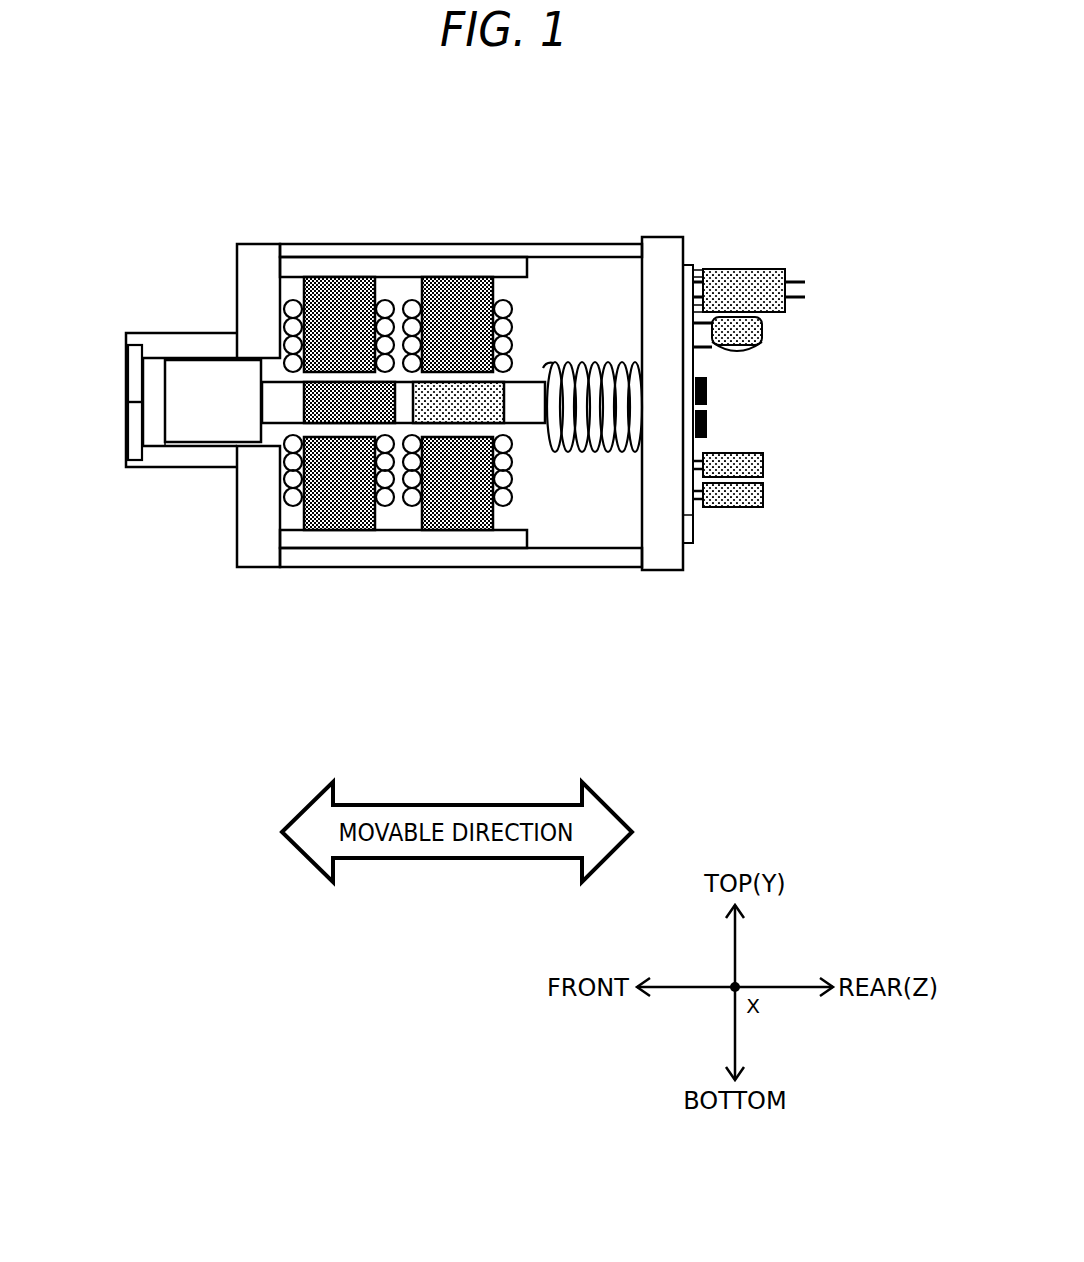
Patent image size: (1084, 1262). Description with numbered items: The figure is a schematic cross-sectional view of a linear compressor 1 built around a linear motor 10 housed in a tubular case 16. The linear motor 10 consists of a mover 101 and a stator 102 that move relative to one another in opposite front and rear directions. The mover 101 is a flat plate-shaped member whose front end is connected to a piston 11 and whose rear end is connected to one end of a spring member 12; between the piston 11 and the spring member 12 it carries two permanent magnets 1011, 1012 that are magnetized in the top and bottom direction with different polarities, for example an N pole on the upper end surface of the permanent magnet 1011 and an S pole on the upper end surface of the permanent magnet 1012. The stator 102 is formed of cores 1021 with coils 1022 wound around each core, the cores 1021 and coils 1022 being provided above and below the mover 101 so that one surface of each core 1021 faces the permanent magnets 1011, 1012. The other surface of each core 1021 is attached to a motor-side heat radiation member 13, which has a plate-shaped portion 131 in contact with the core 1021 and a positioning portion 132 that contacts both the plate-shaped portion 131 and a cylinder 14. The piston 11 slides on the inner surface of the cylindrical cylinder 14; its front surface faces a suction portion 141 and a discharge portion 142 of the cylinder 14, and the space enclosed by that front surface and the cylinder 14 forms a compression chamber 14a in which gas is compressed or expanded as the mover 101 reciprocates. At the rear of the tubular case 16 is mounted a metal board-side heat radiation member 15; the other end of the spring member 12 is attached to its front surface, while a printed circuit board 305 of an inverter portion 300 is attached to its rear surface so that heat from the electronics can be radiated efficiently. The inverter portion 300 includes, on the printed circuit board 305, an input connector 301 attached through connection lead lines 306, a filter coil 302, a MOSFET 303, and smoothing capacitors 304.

The linear compressor 1 is at (168, 211).
The linear motor 10 is at (453, 416).
The mover 101 is at (328, 173).
The permanent magnet 1011 is at (345, 400).
The permanent magnet 1012 is at (452, 398).
The stator 102 is at (468, 665).
The core 1021 is at (477, 522).
The coil 1022 is at (503, 463).
The piston 11 is at (206, 430).
The spring member 12 is at (600, 362).
The motor-side heat radiation member 13 is at (348, 703).
The plate-shaped portion 131 is at (335, 540).
The positioning portion 132 is at (265, 522).
The cylinder 14 is at (155, 460).
The compression chamber 14a is at (150, 380).
The suction portion 141 is at (132, 381).
The discharge portion 142 is at (130, 437).
The board-side heat radiation member 15 is at (662, 542).
The tubular case 16 is at (562, 243).
The inverter portion 300 is at (877, 210).
The input connector 301 is at (765, 270).
The filter coil 302 is at (762, 328).
The metal-oxide-semiconductor field-effect transistor 303 is at (708, 388).
The smoothing capacitors 304 is at (763, 463).
The printed circuit board 305 is at (690, 525).
The connection lead lines 306 is at (701, 268).